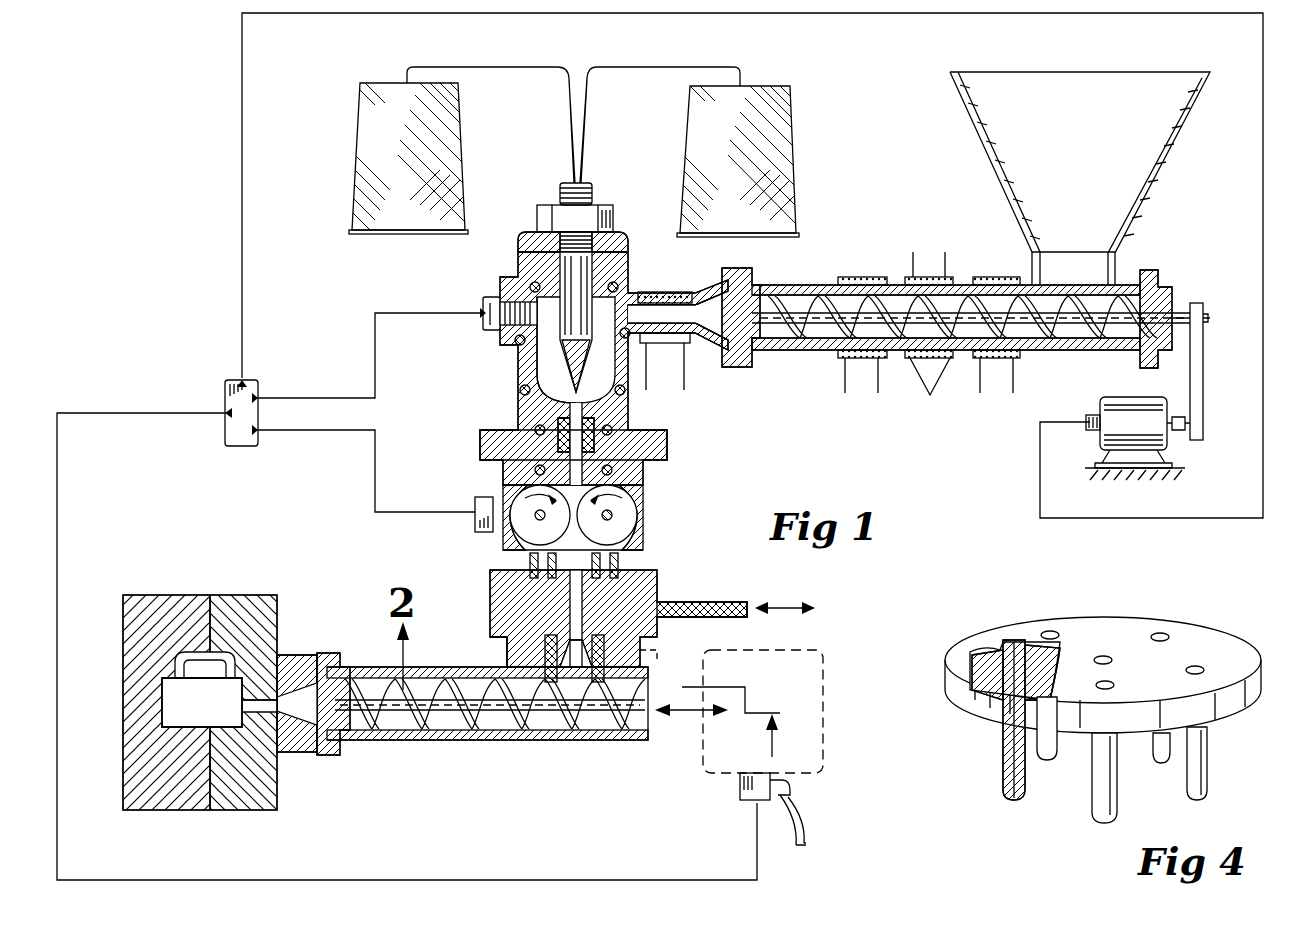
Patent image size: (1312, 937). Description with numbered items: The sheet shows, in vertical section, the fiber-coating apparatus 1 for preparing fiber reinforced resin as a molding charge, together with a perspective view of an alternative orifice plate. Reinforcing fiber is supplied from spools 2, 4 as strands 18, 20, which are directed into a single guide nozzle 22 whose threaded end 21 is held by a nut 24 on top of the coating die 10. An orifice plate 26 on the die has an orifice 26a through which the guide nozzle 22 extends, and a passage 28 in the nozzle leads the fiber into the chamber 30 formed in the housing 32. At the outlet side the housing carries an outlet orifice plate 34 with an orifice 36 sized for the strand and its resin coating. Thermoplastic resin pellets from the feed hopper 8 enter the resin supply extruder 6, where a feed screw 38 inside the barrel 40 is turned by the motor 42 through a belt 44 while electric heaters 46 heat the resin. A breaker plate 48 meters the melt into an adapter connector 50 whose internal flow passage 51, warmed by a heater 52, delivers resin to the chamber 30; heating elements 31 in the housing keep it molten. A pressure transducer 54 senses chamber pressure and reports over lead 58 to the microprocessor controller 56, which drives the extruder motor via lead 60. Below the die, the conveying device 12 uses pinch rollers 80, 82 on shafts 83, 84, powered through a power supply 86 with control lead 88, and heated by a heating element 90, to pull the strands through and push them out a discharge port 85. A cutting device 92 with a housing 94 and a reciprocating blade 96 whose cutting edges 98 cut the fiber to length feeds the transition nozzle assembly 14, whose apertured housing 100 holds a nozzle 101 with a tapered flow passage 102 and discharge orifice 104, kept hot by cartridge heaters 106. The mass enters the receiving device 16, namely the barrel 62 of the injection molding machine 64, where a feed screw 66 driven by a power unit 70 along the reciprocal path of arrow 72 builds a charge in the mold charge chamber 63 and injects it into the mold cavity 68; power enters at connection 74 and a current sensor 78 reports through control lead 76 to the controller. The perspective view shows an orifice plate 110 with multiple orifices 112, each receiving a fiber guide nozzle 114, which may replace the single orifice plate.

In FIG. 1, the injection molding system 1 is at (165, 125).
In FIG. 1, the spool of fiber 2 is at (356, 96).
In FIG. 1, the spool of fiber 4 is at (800, 110).
In FIG. 1, the resin supply extruder 6 is at (1170, 285).
In FIG. 1, the feed hopper 8 is at (1068, 72).
In FIG. 1, the coating die 10 is at (505, 254).
In FIG. 1, the fiber and resin conveying device 12 is at (478, 452).
In FIG. 1, the transition nozzle assembly 14 is at (485, 632).
In FIG. 1, the receiving device 16 is at (460, 762).
In FIG. 1, the fiber strand 18 is at (502, 67).
In FIG. 1, the fiber strand 20 is at (651, 67).
In FIG. 1, the threaded end 21 is at (586, 183).
In FIG. 1, the guide nozzle 22 is at (560, 330).
In FIG. 1, the nut 24 is at (606, 205).
In FIG. 1, the orifice plate 26 is at (537, 236).
In FIG. 1, the orifice 26a is at (572, 236).
In FIG. 1, the passage 28 is at (565, 410).
In FIG. 1, the chamber 30 is at (560, 345).
In FIG. 1, the electric heating elements 31 is at (530, 285).
In FIG. 1, the housing 32 is at (540, 400).
In FIG. 1, the outlet orifice plate 34 is at (525, 468).
In FIG. 1, the orifice 36 is at (600, 408).
In FIG. 1, the feed screw 38 is at (1085, 335).
In FIG. 1, the extruder barrel 40 is at (1058, 350).
In FIG. 1, the motor 42 is at (1155, 442).
In FIG. 1, the belt 44 is at (1198, 386).
In FIG. 1, the electric heaters 46 is at (929, 327).
In FIG. 1, the breaker plate 48 is at (752, 350).
In FIG. 1, the adapter connector 50 is at (705, 335).
In FIG. 1, the internal flow passage 51 is at (690, 345).
In FIG. 1, the electric heater 52 is at (672, 292).
In FIG. 1, the pressure transducer 54 is at (482, 302).
In FIG. 1, the controller 56 is at (230, 390).
In FIG. 1, the lead 58 is at (300, 398).
In FIG. 1, the lead 60 is at (242, 255).
In FIG. 1, the barrel 62 is at (352, 740).
In FIG. 1, the mold charge chamber 63 is at (314, 730).
In FIG. 1, the injection molding machine 64 is at (126, 590).
In FIG. 1, the feed screw 66 is at (420, 720).
In FIG. 1, the molding cavity 68 is at (170, 710).
In FIG. 1, the power unit 70 is at (822, 708).
In FIG. 1, the arrow 72 is at (690, 712).
In FIG. 1, the connection 74 is at (790, 795).
In FIG. 1, the control lead 76 is at (77, 413).
In FIG. 1, the electrical current sensor 78 is at (740, 795).
In FIG. 1, the pinch roller 80 is at (515, 492).
In FIG. 1, the pinch roller 82 is at (620, 492).
In FIG. 1, the pinch roller shaft 83 is at (535, 516).
In FIG. 1, the shaft 84 is at (615, 514).
In FIG. 1, the discharge port 85 is at (528, 565).
In FIG. 1, the power supply 86 is at (474, 514).
In FIG. 1, the control lead 88 is at (290, 432).
In FIG. 1, the heating element 90 is at (500, 550).
In FIG. 1, the cutting device 92 is at (655, 590).
In FIG. 1, the housing 94 is at (655, 600).
In FIG. 1, the cutting blade 96 is at (750, 610).
In FIG. 1, the cutting edges 98 is at (612, 516).
In FIG. 1, the apertured housing 100 is at (507, 640).
In FIG. 1, the nozzle 101 is at (650, 656).
In FIG. 1, the flow passage 102 is at (600, 640).
In FIG. 1, the discharge orifice 104 is at (580, 690).
In FIG. 1, the cartridge heaters 106 is at (551, 690).
In FIG. 4, the orifice plate 110 is at (950, 690).
In FIG. 4, the orifices 112 is at (1105, 683).
In FIG. 4, the fiber guide nozzle 114 is at (1003, 770).